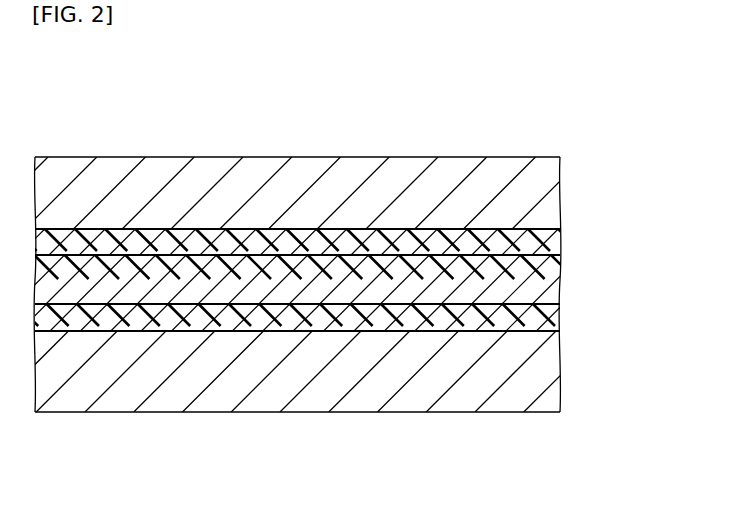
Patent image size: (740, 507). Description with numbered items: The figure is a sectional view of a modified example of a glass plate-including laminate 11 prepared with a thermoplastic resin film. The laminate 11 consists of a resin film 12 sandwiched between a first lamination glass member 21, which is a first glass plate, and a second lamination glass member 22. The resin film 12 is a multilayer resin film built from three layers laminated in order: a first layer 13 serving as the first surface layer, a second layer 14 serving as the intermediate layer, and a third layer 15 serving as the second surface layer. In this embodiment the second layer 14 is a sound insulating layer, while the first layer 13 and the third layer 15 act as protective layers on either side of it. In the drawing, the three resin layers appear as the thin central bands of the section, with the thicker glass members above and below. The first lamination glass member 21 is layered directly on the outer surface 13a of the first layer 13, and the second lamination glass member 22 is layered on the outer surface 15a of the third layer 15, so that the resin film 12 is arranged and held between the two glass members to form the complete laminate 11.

The glass plate-including laminate 11 is at (146, 130).
The resin film 12 is at (334, 224).
The first layer 13 is at (569, 243).
The outer surface of the first layer 13a is at (490, 228).
The second layer 14 is at (569, 285).
The third layer 15 is at (569, 320).
The outer surface of the third layer 15a is at (487, 332).
The first lamination glass member 21 is at (563, 186).
The second lamination glass member 22 is at (563, 382).